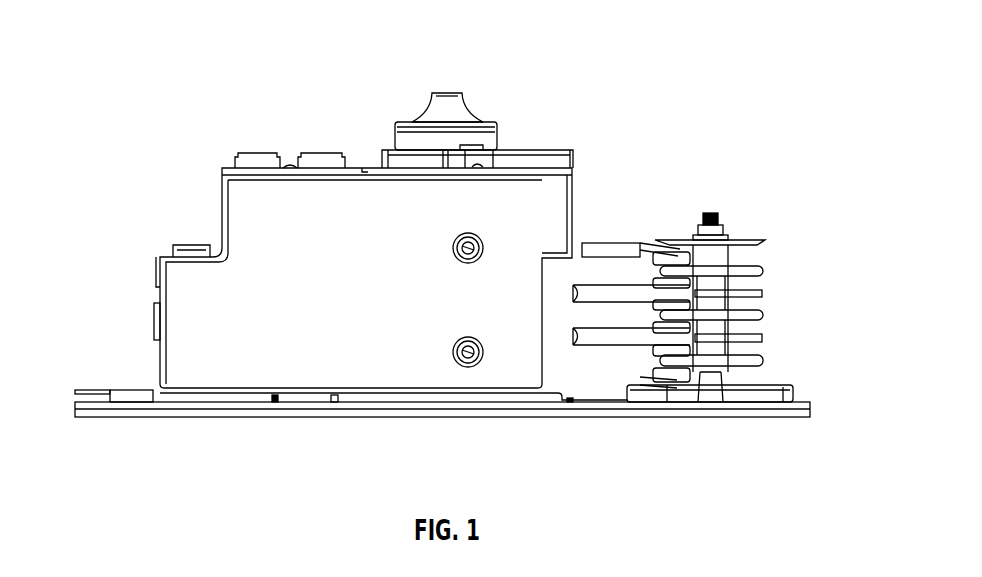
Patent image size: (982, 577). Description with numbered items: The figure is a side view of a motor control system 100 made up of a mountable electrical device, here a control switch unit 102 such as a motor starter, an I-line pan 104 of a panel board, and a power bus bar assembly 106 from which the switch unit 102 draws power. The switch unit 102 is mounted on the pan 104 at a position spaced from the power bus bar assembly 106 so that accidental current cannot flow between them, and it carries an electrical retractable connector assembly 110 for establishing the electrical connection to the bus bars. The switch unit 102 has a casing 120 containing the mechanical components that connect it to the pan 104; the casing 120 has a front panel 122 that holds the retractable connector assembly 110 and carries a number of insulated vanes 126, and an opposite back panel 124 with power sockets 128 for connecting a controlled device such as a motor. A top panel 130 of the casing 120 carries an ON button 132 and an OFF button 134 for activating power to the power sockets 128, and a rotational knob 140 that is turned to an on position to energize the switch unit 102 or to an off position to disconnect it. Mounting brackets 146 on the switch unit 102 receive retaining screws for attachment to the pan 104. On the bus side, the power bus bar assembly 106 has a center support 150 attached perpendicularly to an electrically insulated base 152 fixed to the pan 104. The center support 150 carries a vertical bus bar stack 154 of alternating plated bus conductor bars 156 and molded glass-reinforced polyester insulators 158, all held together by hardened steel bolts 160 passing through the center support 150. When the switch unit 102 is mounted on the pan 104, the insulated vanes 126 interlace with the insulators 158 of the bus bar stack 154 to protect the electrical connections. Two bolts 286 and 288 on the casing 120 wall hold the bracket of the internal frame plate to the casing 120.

The motor control system 100 is at (151, 55).
The control switch unit 102 is at (230, 166).
The I-line pan 104 is at (365, 420).
The power bus bar assembly 106 is at (663, 238).
The electrical retractable connector assembly 110 is at (610, 260).
The casing 120 is at (253, 228).
The front panel 122 is at (573, 176).
The back panel 124 is at (155, 282).
The insulated vanes 126 is at (660, 300).
The power sockets 128 is at (155, 322).
The top panel 130 is at (365, 170).
The ON button 132 is at (258, 153).
The OFF button 134 is at (320, 153).
The rotational knob 140 is at (425, 100).
The mounting brackets 146 is at (95, 392).
The center support 150 is at (740, 238).
The base 152 is at (793, 392).
The vertical bus bar stack 154 is at (743, 378).
The bus conductor bars 156 is at (763, 267).
The insulators 158 is at (758, 238).
The bolts 160 is at (714, 220).
The bolt 286 is at (470, 367).
The bolt 288 is at (485, 247).